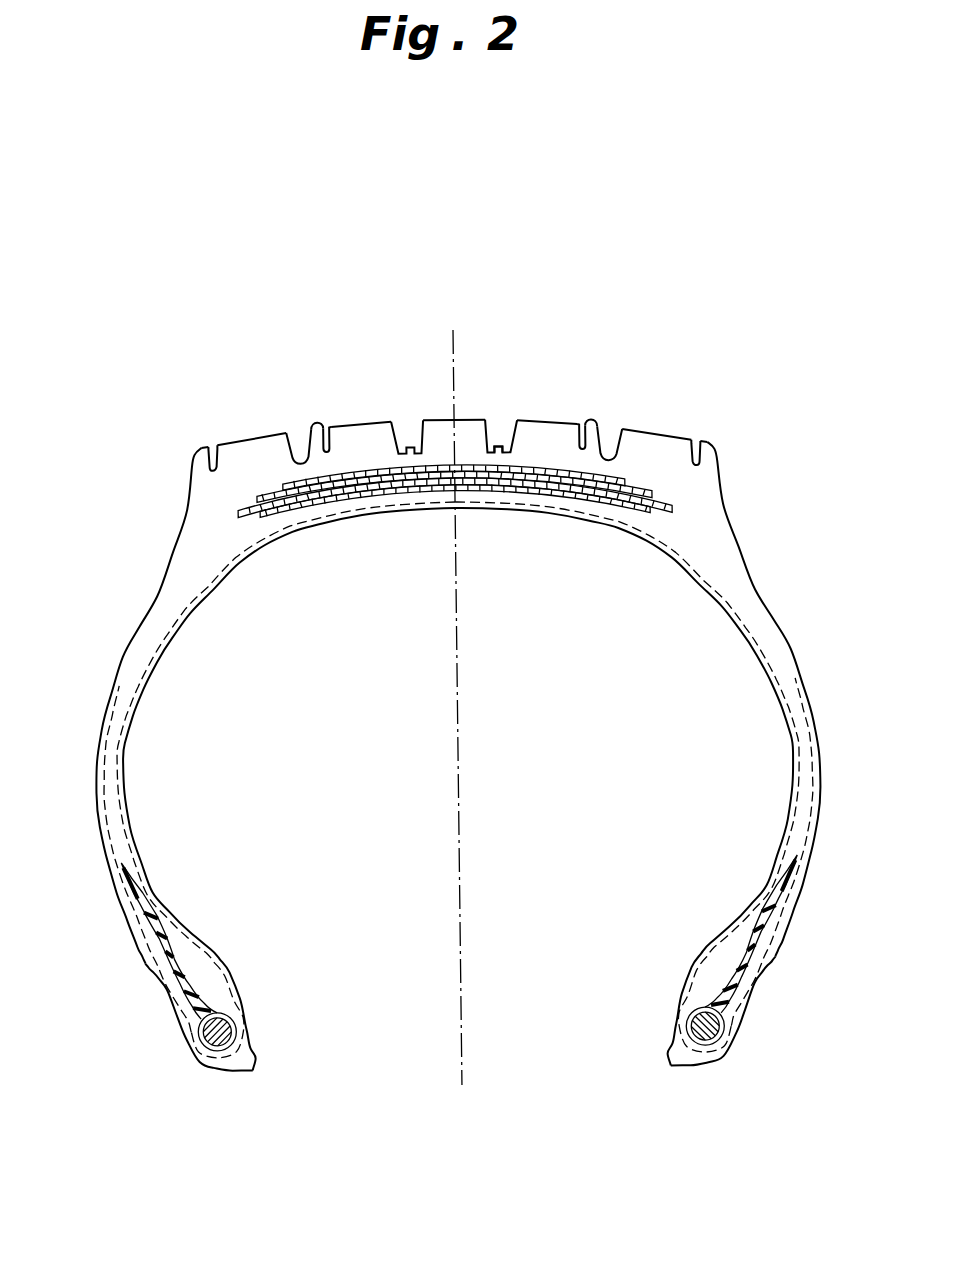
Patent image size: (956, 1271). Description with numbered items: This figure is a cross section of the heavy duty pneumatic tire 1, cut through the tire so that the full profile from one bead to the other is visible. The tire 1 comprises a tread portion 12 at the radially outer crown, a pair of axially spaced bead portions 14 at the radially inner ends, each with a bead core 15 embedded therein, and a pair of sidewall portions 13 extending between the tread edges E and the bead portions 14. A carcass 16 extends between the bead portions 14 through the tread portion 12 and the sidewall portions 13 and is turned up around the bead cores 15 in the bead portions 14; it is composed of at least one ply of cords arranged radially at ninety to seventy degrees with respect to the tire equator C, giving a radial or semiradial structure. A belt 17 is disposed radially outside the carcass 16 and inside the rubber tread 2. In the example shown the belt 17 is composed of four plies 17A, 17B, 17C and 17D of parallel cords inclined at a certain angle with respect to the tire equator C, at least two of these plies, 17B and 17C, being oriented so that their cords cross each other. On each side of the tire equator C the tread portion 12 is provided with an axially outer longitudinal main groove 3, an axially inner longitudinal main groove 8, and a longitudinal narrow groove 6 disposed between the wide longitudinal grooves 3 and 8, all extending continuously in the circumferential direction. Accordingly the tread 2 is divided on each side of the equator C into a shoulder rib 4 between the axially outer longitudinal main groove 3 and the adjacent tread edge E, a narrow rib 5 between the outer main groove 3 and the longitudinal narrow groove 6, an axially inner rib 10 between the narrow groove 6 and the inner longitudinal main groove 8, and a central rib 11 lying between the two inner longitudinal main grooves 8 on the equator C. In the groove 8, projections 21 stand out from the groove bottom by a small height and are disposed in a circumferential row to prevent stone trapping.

The heavy duty pneumatic tire 1 is at (778, 389).
The tread 2 is at (248, 436).
The axially outer longitudinal main groove 3 is at (295, 421).
The shoulder rib 4 is at (660, 428).
The narrow rib 5 is at (313, 426).
The longitudinal narrow groove 6 is at (324, 424).
The axially inner longitudinal main groove 8 is at (407, 429).
The axially inner rib 10 is at (360, 420).
The central rib 11 is at (466, 419).
The tread portion 12 is at (442, 409).
The sidewall portion 13 is at (118, 579).
The bead portion 14 is at (148, 987).
The bead core 15 is at (199, 1038).
The carcass 16 is at (690, 564).
The belt 17 is at (364, 482).
The belt ply 17A is at (515, 490).
The belt ply 17B is at (563, 493).
The belt ply 17C is at (585, 500).
The belt ply 17D is at (610, 506).
The projection 21 is at (495, 449).
The tread edge E is at (190, 444).
The tire equator C is at (454, 1057).